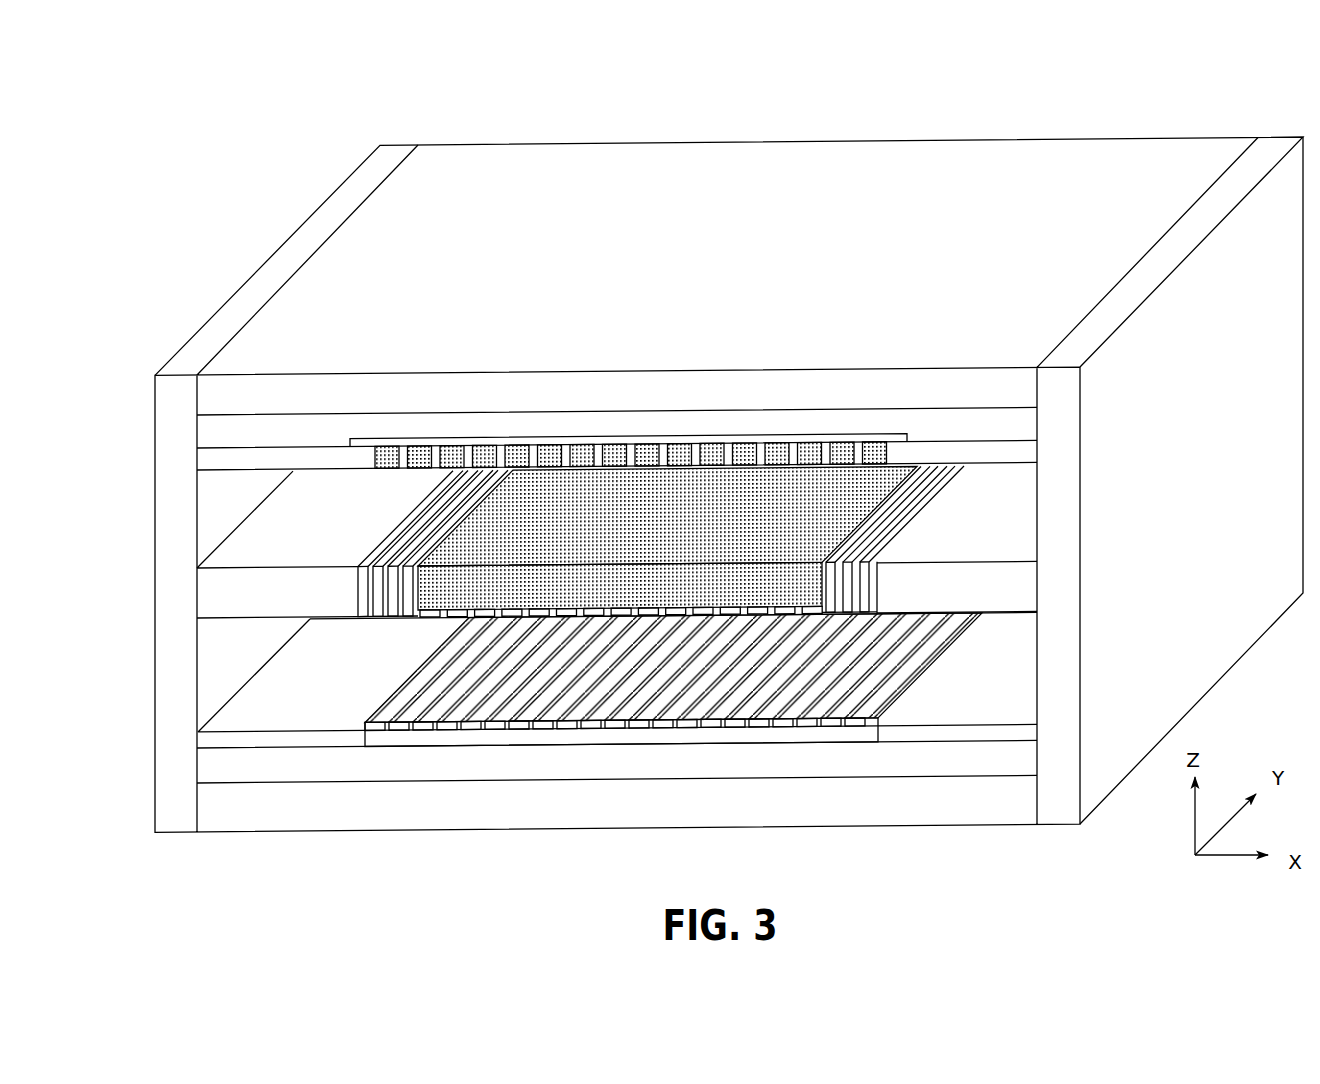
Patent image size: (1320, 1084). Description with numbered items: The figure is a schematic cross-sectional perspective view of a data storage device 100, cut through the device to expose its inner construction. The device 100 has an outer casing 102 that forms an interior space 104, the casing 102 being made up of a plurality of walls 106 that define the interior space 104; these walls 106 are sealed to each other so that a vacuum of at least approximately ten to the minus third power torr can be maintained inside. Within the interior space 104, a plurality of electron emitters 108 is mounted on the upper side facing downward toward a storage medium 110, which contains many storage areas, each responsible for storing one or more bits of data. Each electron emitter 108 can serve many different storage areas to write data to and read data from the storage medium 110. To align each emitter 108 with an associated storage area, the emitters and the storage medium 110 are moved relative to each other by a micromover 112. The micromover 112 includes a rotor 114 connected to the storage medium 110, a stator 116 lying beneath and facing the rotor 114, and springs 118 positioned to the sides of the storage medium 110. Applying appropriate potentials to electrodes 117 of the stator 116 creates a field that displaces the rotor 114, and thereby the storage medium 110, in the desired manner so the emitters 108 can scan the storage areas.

The data storage device 100 is at (1238, 126).
The outer casing 102 is at (1032, 148).
The interior space 104 is at (233, 668).
The walls 106 is at (1121, 148).
The electron emitters 108 is at (422, 460).
The storage medium 110 is at (600, 596).
The micromover 112 is at (351, 766).
The rotor 114 is at (431, 634).
The stator 116 is at (637, 738).
The electrodes 117 is at (387, 713).
The springs 118 is at (362, 546).